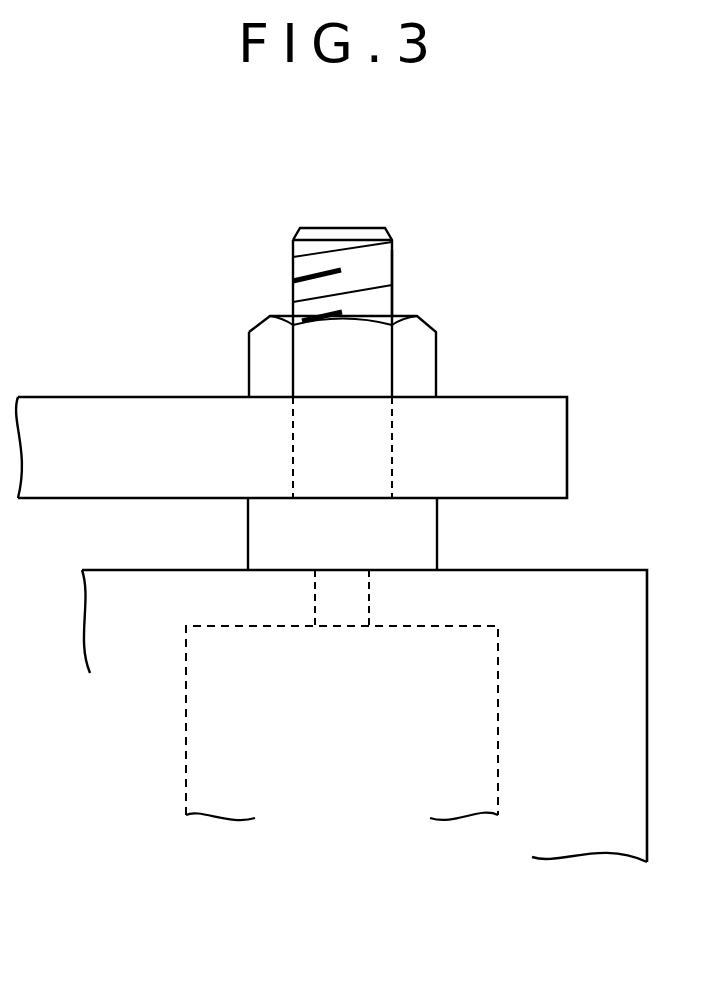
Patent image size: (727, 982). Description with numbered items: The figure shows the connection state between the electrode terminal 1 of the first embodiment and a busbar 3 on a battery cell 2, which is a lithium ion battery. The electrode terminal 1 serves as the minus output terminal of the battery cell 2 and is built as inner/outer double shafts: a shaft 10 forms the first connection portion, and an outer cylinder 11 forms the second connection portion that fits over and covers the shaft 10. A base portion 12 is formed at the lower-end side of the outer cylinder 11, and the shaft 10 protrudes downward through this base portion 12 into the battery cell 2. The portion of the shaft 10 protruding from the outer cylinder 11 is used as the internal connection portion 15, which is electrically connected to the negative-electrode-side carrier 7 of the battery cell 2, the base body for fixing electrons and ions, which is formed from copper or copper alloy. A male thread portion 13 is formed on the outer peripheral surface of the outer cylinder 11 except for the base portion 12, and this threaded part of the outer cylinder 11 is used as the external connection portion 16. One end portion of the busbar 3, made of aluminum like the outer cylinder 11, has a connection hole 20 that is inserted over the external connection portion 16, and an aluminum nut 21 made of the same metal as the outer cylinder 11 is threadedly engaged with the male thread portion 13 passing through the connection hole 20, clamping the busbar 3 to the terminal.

The electrode terminal 1 is at (328, 355).
The outer cylinder 11 is at (293, 248).
The male thread portion 13 is at (293, 293).
The external connection portion 16 is at (394, 299).
The base portion 12 is at (248, 533).
The aluminum nut 21 is at (249, 358).
The busbar 3 is at (291, 413).
The connection hole 20 is at (292, 448).
The battery cell 2 is at (364, 682).
The shaft 10 is at (313, 600).
The internal connection portion 15 is at (372, 598).
The negative-electrode-side carrier 7 is at (500, 720).